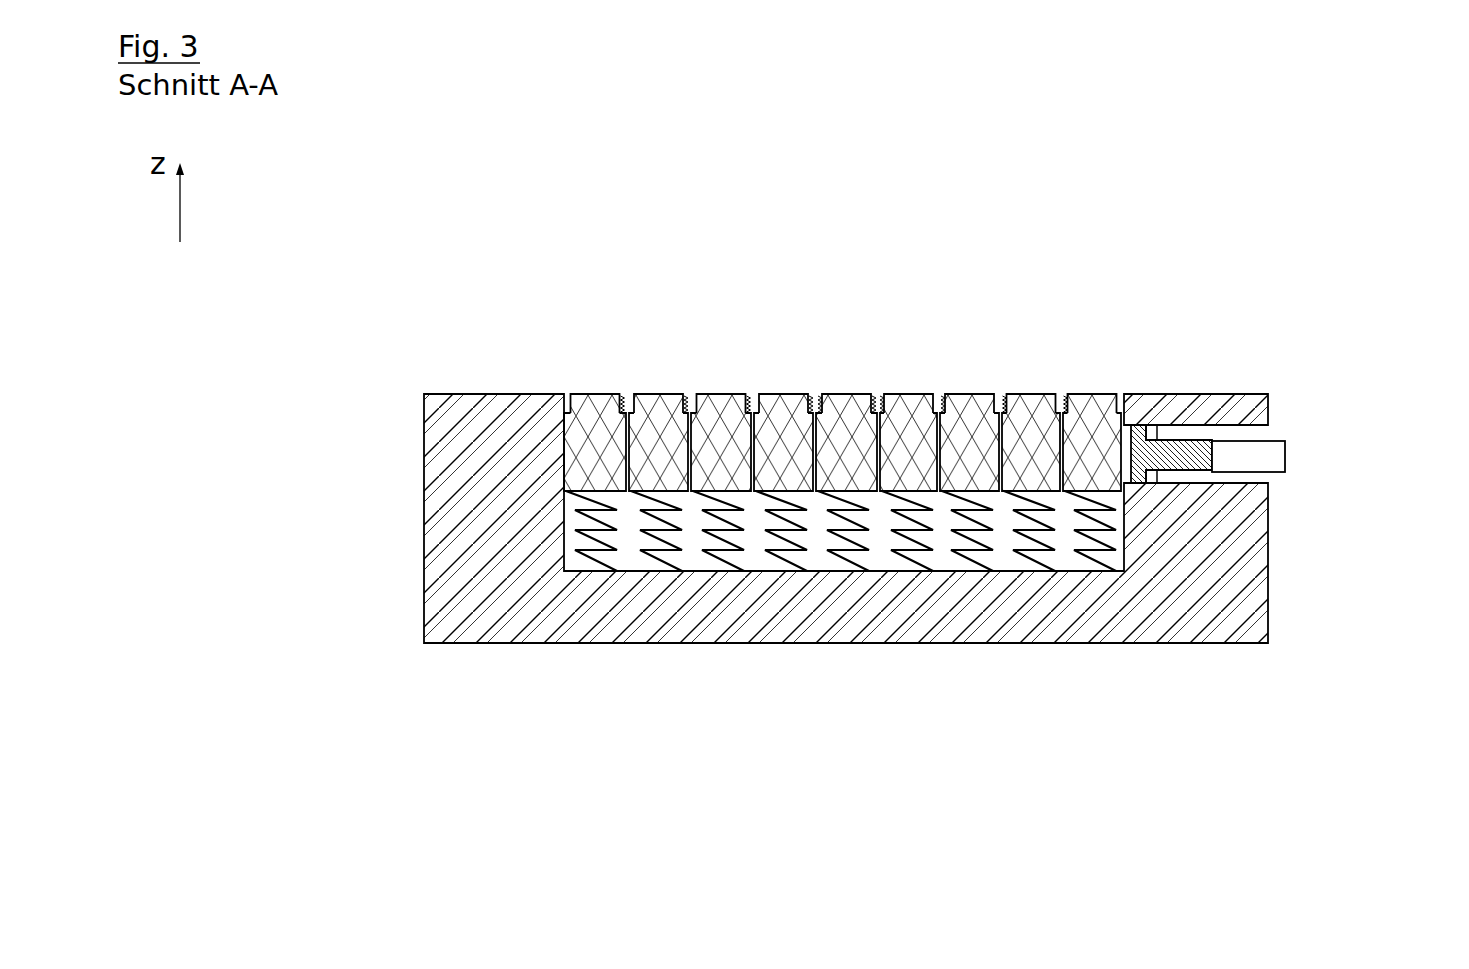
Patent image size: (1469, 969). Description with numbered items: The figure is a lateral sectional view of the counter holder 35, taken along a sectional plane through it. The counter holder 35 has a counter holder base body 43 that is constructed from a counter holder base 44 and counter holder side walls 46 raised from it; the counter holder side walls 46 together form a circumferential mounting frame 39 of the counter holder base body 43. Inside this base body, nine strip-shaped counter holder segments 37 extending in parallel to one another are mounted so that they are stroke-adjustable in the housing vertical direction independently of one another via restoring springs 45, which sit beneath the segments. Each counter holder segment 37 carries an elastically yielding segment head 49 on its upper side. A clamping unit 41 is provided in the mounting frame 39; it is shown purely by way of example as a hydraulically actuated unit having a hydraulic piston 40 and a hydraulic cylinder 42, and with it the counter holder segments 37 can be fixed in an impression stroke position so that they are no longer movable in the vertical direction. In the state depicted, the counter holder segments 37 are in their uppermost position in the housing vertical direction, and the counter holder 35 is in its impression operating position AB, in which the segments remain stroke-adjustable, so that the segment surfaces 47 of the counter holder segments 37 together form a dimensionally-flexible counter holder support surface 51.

The counter holder 35 is at (485, 325).
The counter holder segment 37 is at (797, 470).
The mounting frame 39 is at (846, 629).
The hydraulic piston 40 is at (1173, 436).
The clamping unit 41 is at (1390, 402).
The hydraulic cylinder 42 is at (1285, 455).
The counter holder base body 43 is at (608, 848).
The counter holder base 44 is at (503, 620).
The restoring spring 45 is at (972, 560).
The counter holder side wall 46 is at (462, 480).
The segment surface 47 is at (847, 392).
The segment head 49 is at (604, 394).
The counter holder support surface 51 is at (843, 288).
The impression operating position AB is at (1090, 352).